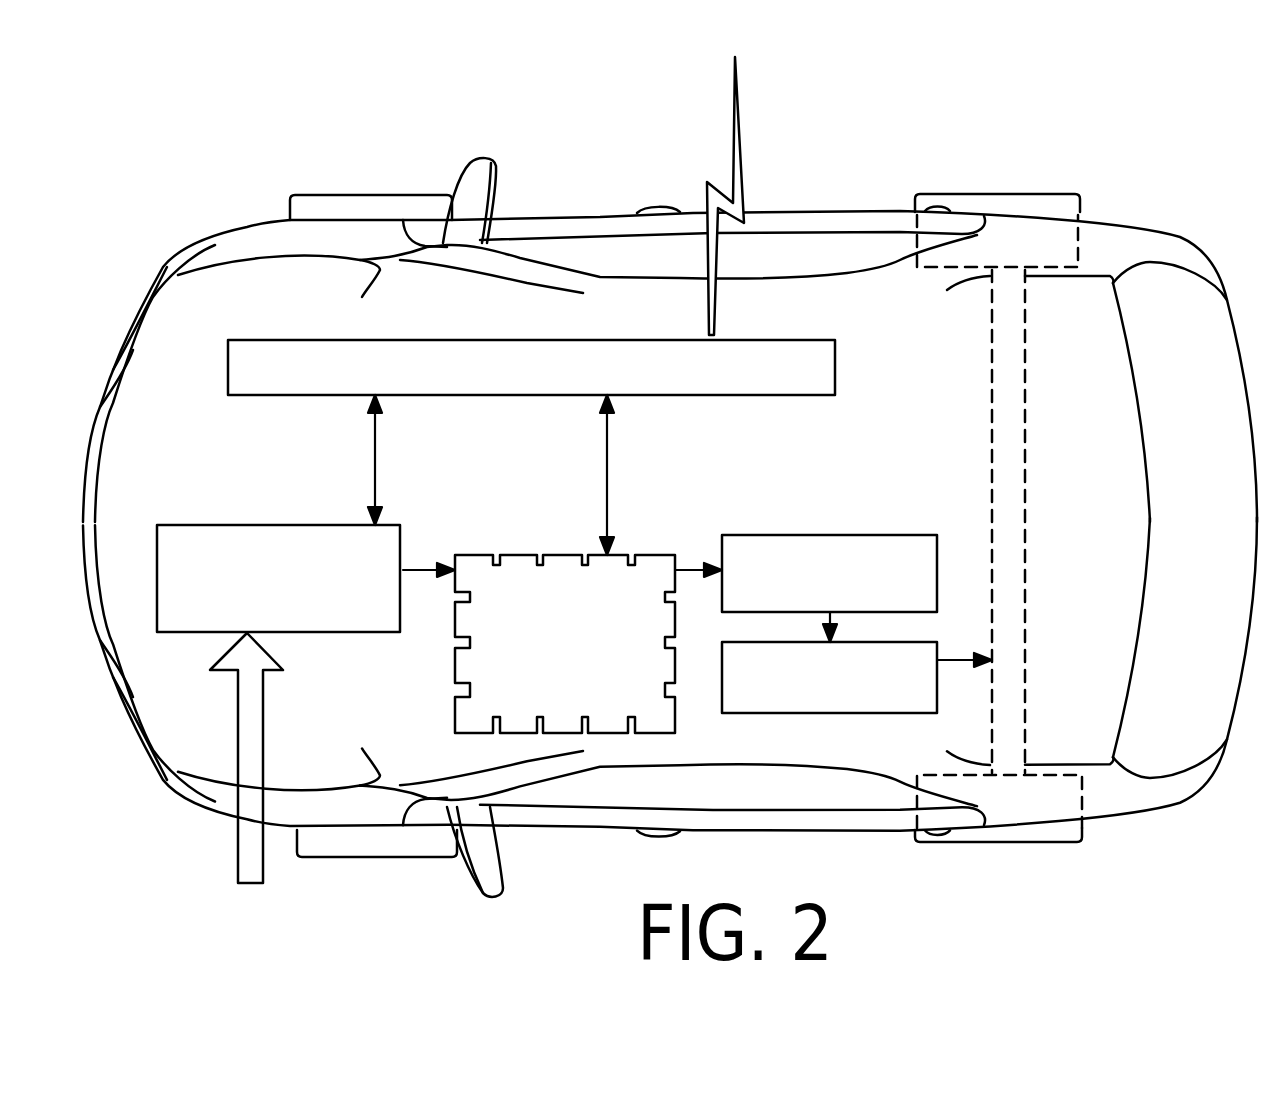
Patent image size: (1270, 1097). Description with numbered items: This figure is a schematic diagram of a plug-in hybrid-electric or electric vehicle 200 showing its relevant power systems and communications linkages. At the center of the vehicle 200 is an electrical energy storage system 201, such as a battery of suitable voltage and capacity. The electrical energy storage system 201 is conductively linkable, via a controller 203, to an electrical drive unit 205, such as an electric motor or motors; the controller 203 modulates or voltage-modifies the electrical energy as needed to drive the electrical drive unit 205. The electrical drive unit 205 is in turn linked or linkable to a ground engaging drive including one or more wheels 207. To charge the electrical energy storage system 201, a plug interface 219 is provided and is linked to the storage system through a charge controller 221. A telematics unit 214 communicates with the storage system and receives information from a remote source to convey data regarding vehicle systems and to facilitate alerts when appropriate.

The vehicle 200 is at (797, 194).
The electrical energy storage system 201 is at (594, 646).
The controller 203 is at (852, 588).
The electrical drive unit 205 is at (852, 690).
The wheels 207 is at (1010, 207).
The telematics unit 214 is at (554, 380).
The plug interface 219 is at (237, 883).
The charge controller 221 is at (302, 591).